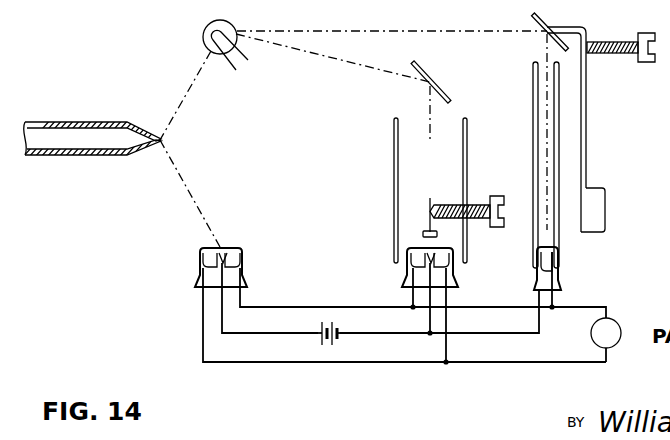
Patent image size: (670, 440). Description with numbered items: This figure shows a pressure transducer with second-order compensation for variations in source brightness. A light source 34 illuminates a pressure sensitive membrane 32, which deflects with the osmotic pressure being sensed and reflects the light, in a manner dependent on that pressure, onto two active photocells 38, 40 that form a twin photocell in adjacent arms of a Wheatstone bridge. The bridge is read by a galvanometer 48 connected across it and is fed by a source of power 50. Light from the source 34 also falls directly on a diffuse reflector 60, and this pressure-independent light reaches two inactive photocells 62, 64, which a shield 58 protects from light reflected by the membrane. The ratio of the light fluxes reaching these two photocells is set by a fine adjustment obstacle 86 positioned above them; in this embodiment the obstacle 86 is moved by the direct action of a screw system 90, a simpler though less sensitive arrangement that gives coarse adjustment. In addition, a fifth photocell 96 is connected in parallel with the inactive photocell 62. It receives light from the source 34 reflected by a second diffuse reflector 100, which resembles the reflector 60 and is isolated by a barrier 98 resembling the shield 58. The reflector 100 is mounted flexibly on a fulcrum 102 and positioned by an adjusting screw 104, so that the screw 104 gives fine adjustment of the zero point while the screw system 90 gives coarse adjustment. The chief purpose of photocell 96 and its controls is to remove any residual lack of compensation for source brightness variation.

The pressure sensitive membrane 32 is at (146, 130).
The light source 34 is at (206, 30).
The photocell 38 is at (200, 263).
The photocell 40 is at (243, 263).
The galvanometer 48 is at (592, 328).
The source of power 50 is at (337, 345).
The shield 58 is at (394, 150).
The diffuse reflector 60 is at (427, 79).
The photocell 62 is at (407, 275).
The photocell 64 is at (453, 275).
The fine adjustment obstacle 86 is at (428, 212).
The screw system 90 is at (481, 203).
The fifth photocell 96 is at (558, 280).
The barrier 98 is at (533, 77).
The diffuse reflector 100 is at (553, 26).
The fulcrum 102 is at (588, 188).
The adjusting screw 104 is at (618, 55).